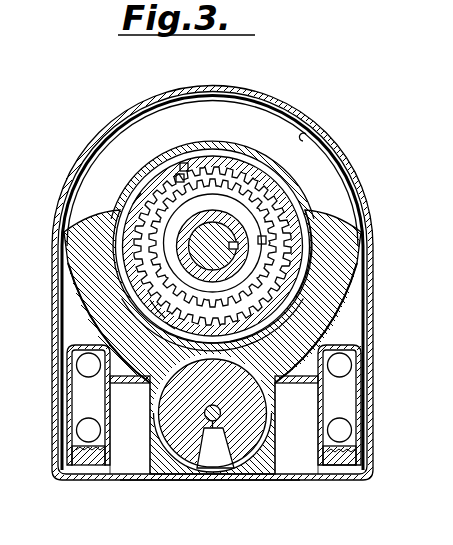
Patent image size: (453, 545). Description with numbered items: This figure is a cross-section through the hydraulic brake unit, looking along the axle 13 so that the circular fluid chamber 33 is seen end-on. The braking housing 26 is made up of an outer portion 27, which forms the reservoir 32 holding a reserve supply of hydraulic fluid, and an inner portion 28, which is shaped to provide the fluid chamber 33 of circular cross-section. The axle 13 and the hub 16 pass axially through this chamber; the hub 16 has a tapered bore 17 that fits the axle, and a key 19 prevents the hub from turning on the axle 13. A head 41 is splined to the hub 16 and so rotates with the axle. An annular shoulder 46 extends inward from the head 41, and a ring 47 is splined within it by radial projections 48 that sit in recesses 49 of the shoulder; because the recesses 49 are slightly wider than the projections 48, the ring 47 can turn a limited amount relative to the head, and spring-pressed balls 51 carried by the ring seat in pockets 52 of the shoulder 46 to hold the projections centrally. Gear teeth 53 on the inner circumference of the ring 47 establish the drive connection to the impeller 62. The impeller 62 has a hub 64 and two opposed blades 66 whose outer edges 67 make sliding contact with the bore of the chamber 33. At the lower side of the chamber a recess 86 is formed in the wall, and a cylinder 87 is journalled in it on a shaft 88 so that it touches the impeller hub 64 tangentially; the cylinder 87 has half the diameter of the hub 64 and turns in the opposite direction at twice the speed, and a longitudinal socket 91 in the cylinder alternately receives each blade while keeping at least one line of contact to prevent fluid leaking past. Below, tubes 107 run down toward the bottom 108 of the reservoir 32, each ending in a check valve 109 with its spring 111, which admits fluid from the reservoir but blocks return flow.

The axle 13 is at (190, 232).
The hub 16 is at (237, 227).
The bore 17 is at (173, 307).
The key 19 is at (305, 270).
The housing 26 is at (52, 253).
The outer portion 27 is at (377, 303).
The inner portion 28 is at (363, 287).
The reservoir 32 is at (120, 473).
The fluid chamber 33 is at (306, 138).
The head 41 is at (143, 272).
The annular shoulder 46 is at (140, 207).
The ring 47 is at (252, 182).
The radial projections 48 is at (223, 165).
The recesses 49 is at (158, 193).
The spring-pressed balls 51 is at (183, 165).
The pockets 52 is at (180, 175).
The gear teeth 53 is at (265, 238).
The impeller 62 is at (263, 332).
The hub 64 is at (187, 322).
The blades 66 is at (70, 264).
The outer edges 67 is at (64, 238).
The recess 86 is at (180, 458).
The cylinder 87 is at (253, 462).
The shaft 88 is at (222, 412).
The socket 91 is at (236, 470).
The tube 107 is at (352, 448).
The bottom 108 is at (135, 487).
The check valve 109 is at (348, 465).
The spring 111 is at (350, 456).